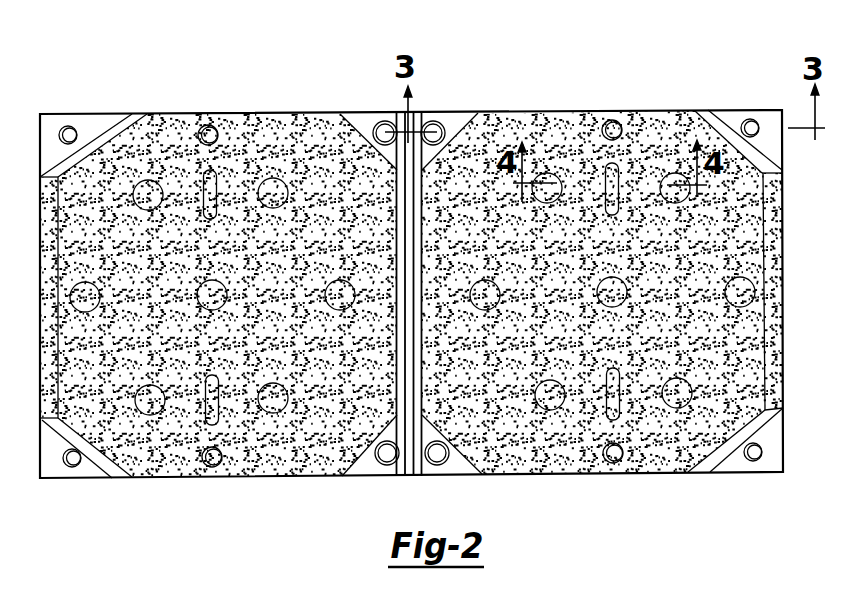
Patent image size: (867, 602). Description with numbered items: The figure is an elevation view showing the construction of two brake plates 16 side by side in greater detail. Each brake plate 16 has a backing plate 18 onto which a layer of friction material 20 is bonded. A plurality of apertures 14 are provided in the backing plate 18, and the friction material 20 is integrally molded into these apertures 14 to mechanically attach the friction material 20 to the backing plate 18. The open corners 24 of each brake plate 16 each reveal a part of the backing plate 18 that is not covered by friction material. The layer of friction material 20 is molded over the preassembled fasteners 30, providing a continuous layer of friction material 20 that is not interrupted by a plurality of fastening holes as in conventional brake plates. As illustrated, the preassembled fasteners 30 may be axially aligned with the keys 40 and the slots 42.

The apertures 14 is at (288, 200).
The brake plate 16 is at (275, 108).
The backing plate 18 is at (55, 472).
The friction material 20 is at (155, 130).
The open corners 24 is at (42, 159).
The preassembled fasteners 30 is at (221, 127).
The keys 40 is at (197, 420).
The slots 42 is at (233, 407).